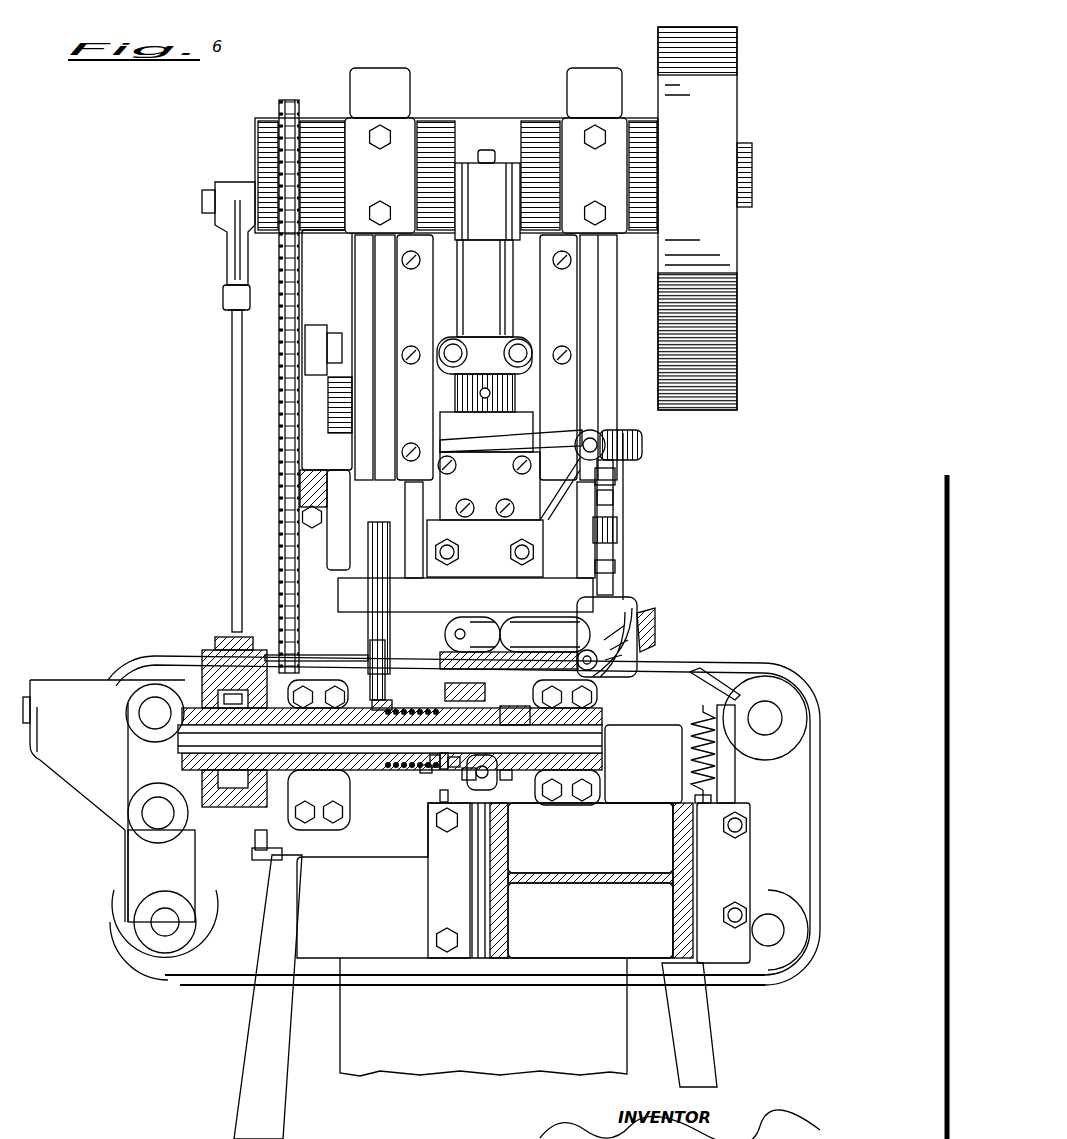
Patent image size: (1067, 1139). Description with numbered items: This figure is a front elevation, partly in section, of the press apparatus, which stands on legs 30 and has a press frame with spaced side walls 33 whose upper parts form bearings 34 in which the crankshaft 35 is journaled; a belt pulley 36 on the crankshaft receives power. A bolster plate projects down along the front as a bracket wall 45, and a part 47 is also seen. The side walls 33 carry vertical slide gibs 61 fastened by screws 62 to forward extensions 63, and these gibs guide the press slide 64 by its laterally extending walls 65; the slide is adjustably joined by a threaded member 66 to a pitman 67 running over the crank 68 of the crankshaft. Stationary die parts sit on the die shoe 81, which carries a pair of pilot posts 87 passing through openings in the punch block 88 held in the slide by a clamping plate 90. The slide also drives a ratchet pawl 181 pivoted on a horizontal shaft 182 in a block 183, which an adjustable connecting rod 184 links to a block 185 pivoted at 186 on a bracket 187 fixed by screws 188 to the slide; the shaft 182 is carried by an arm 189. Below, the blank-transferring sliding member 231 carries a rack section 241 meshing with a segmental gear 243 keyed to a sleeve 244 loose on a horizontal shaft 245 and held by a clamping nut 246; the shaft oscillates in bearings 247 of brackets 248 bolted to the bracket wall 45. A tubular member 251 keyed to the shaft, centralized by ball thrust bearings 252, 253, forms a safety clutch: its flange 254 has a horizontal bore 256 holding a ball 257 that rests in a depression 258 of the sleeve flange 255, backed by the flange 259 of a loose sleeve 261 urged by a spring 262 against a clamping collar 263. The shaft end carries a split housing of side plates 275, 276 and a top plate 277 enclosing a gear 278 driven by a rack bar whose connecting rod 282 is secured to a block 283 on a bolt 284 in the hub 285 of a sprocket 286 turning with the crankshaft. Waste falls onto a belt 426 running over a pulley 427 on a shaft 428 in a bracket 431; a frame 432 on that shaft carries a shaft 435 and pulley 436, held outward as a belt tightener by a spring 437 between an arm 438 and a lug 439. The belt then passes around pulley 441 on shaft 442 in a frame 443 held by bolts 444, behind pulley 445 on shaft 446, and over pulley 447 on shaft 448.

The legs 30 is at (285, 1085).
The side walls 33 is at (605, 270).
The bearings 34 is at (486, 150).
The crankshaft 35 is at (753, 178).
The belt pulley 36 is at (738, 250).
The bracket wall 45 is at (485, 880).
The base frame 47 is at (512, 942).
The slide gibs 61 is at (486, 356).
The screws 62 is at (413, 276).
The extensions 63 is at (600, 324).
The press slide 64 is at (486, 432).
The laterally extending walls 65 is at (546, 510).
The threaded member 66 is at (457, 377).
The pitman 67 is at (505, 276).
The crank 68 is at (450, 156).
The die shoe 81 is at (365, 668).
The pilot posts 87 is at (372, 547).
The punch block 88 is at (465, 595).
The clamping plate 90 is at (485, 548).
The ratchet pawl 181 is at (625, 622).
The horizontal shaft 182 is at (597, 662).
The block 183 is at (630, 600).
The adjustable connecting rod 184 is at (614, 548).
The block 185 is at (622, 460).
The pivot 186 is at (606, 437).
The bracket 187 is at (552, 472).
The screws 188 is at (457, 467).
The arm 189 is at (655, 626).
The sliding member 231 is at (522, 648).
The rack section 241 is at (452, 655).
The segmental gear 243 is at (492, 777).
The sleeve 244 is at (512, 772).
The horizontal shaft 245 is at (182, 742).
The clamping nut 246 is at (495, 802).
The bearings 247 is at (586, 790).
The brackets 248 is at (318, 832).
The tubular member 251 is at (435, 770).
The ball thrust bearing 252 is at (378, 705).
The ball thrust bearing 253 is at (536, 710).
The flange 254 is at (447, 824).
The flange 255 is at (482, 862).
The horizontal bore 256 is at (440, 710).
The ball 257 is at (460, 687).
The depression 258 is at (497, 707).
The flange 259 is at (445, 790).
The sleeve 261 is at (420, 775).
The spring 262 is at (415, 770).
The clamping collar 263 is at (405, 765).
The side plate 275 is at (257, 837).
The side plate 276 is at (230, 806).
The top plate 277 is at (228, 640).
The gear 278 is at (226, 664).
The connecting rod 282 is at (233, 394).
The block 283 is at (232, 262).
The bolt 284 is at (205, 201).
The hub 285 is at (262, 140).
The sprocket 286 is at (291, 108).
The belt 426 is at (440, 983).
The pulley 427 is at (760, 670).
The shaft 428 is at (770, 713).
The bracket 431 is at (728, 762).
The frame 432 is at (746, 856).
The shaft 435 is at (765, 920).
The pulley 436 is at (781, 980).
The spring 437 is at (692, 747).
The arm 438 is at (694, 682).
The lug 439 is at (698, 798).
The pulley 441 is at (135, 960).
The shaft 442 is at (152, 920).
The frame 443 is at (161, 876).
The bolts 444 is at (263, 862).
The pulley 445 is at (126, 828).
The shaft 446 is at (158, 810).
The pulley 447 is at (150, 664).
The shaft 448 is at (150, 714).